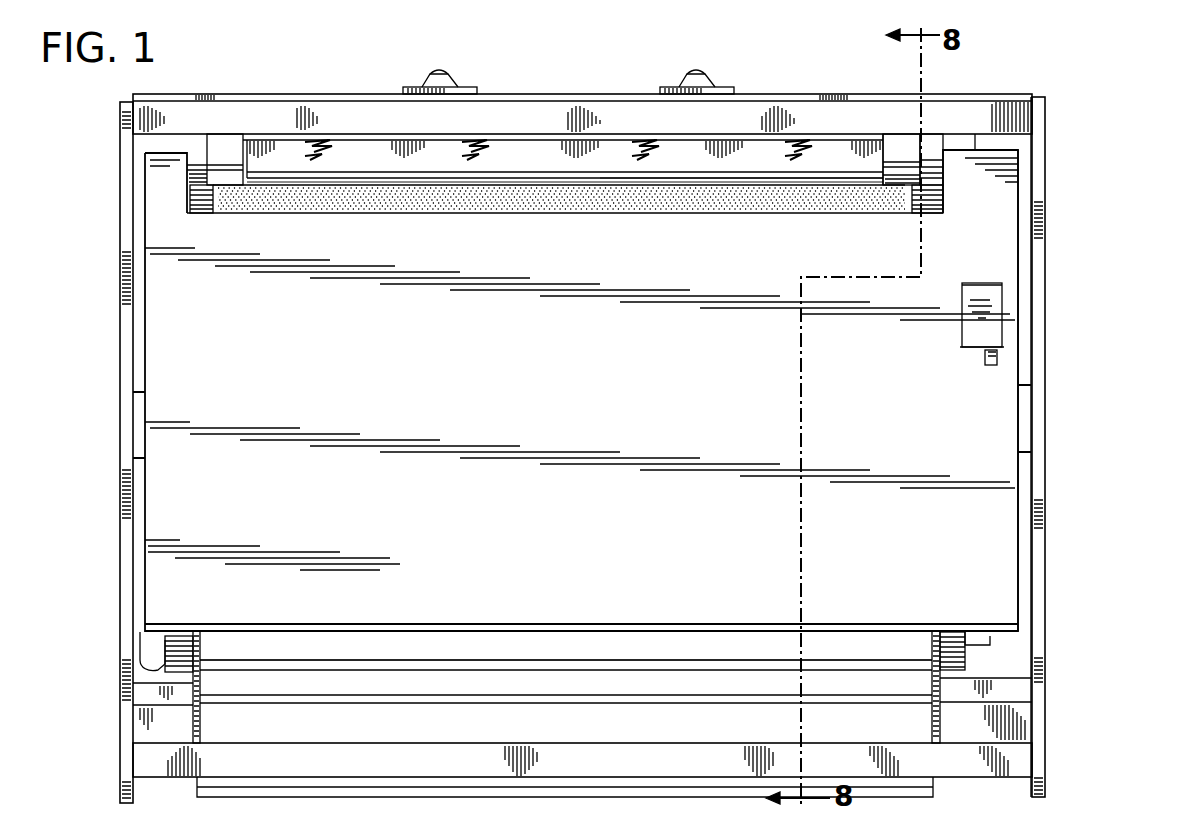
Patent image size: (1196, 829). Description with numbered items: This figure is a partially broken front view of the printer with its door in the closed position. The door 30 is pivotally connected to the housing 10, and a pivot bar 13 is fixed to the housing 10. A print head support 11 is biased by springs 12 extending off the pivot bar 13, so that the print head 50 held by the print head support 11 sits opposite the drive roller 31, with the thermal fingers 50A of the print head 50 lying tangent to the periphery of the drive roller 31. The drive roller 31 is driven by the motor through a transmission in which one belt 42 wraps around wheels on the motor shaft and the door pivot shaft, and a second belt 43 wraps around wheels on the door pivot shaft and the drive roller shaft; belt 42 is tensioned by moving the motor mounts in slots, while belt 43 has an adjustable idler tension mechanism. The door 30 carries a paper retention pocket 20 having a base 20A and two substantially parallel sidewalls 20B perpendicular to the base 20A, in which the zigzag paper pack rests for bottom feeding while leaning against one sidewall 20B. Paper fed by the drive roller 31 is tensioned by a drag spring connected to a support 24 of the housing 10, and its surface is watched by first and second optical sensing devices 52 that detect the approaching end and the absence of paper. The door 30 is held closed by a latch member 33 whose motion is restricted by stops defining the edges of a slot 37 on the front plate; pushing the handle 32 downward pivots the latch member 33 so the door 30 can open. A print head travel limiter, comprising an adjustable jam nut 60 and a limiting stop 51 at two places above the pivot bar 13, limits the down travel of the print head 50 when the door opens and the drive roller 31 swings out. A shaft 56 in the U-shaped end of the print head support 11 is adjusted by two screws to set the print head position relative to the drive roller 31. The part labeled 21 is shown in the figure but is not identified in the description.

The housing 10 is at (118, 419).
The print head support 11 is at (684, 178).
The springs 12 is at (323, 138).
The pivot bar 13 is at (152, 128).
The paper retention pocket 20 is at (903, 793).
The base 20A is at (658, 793).
The sidewalls 20B is at (797, 634).
The bottom panel 21 is at (1013, 753).
The support 24 is at (1022, 423).
The door 30 is at (556, 386).
The drive roller 31 is at (575, 205).
The handle 32 is at (993, 321).
The latch member 33 is at (983, 356).
The slot 37 is at (998, 357).
The belt 42 is at (138, 675).
The belt 43 is at (967, 636).
The print head 50 is at (527, 177).
The thermal fingers 50A is at (462, 185).
The limiting stop 51 is at (935, 95).
The optical sensing devices 52 is at (229, 134).
The shaft 56 is at (932, 163).
The adjustable jam nut 60 is at (443, 72).